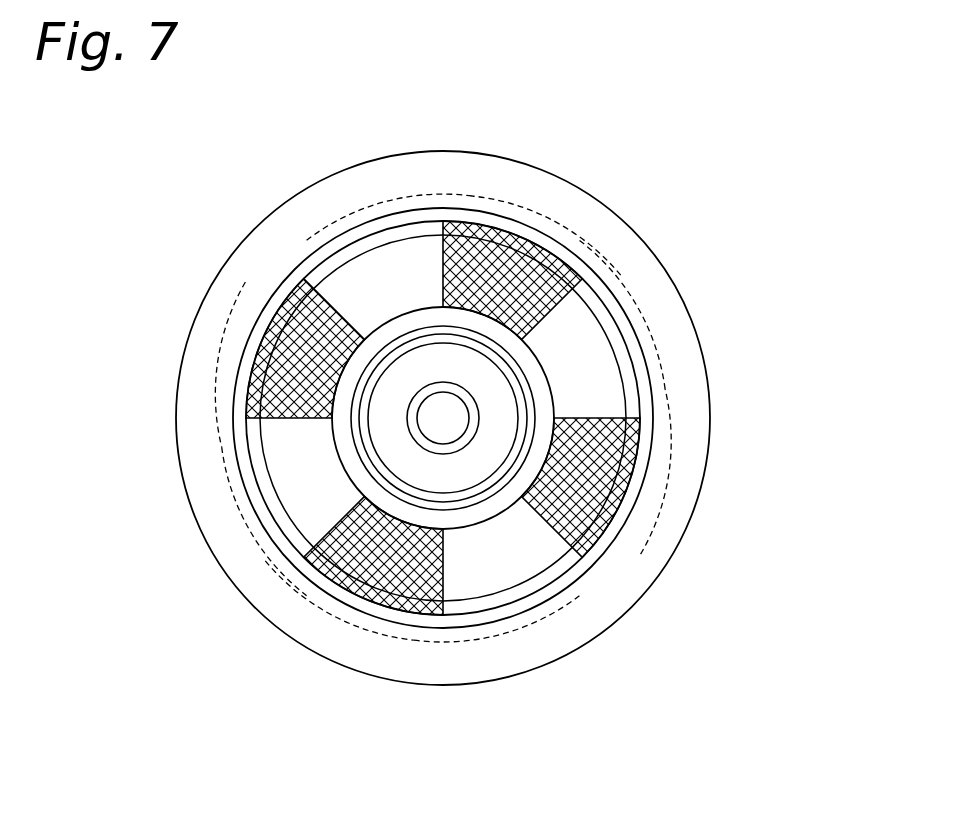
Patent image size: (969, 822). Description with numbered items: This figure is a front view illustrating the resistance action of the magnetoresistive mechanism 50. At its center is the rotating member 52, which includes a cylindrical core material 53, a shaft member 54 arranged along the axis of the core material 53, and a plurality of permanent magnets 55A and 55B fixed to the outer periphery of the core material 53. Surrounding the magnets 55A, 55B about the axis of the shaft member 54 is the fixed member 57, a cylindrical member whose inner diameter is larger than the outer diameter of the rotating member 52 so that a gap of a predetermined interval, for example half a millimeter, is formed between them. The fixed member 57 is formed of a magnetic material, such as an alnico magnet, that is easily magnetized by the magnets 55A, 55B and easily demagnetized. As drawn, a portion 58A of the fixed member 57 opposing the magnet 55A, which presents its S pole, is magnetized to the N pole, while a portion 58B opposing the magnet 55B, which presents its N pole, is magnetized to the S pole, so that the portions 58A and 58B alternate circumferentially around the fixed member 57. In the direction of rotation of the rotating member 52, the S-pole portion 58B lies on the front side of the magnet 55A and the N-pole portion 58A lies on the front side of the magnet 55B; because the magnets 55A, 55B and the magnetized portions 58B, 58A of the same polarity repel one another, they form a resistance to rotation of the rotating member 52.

The magnetoresistive mechanism 50 is at (648, 205).
The rotating member 52 is at (265, 505).
The core material 53 is at (483, 507).
The shaft member 54 is at (445, 418).
The magnet 55A is at (513, 243).
The magnet 55B is at (372, 262).
The fixed member 57 is at (645, 597).
The portion magnetized to the N pole 58A is at (563, 217).
The portion magnetized to the S pole 58B is at (388, 193).